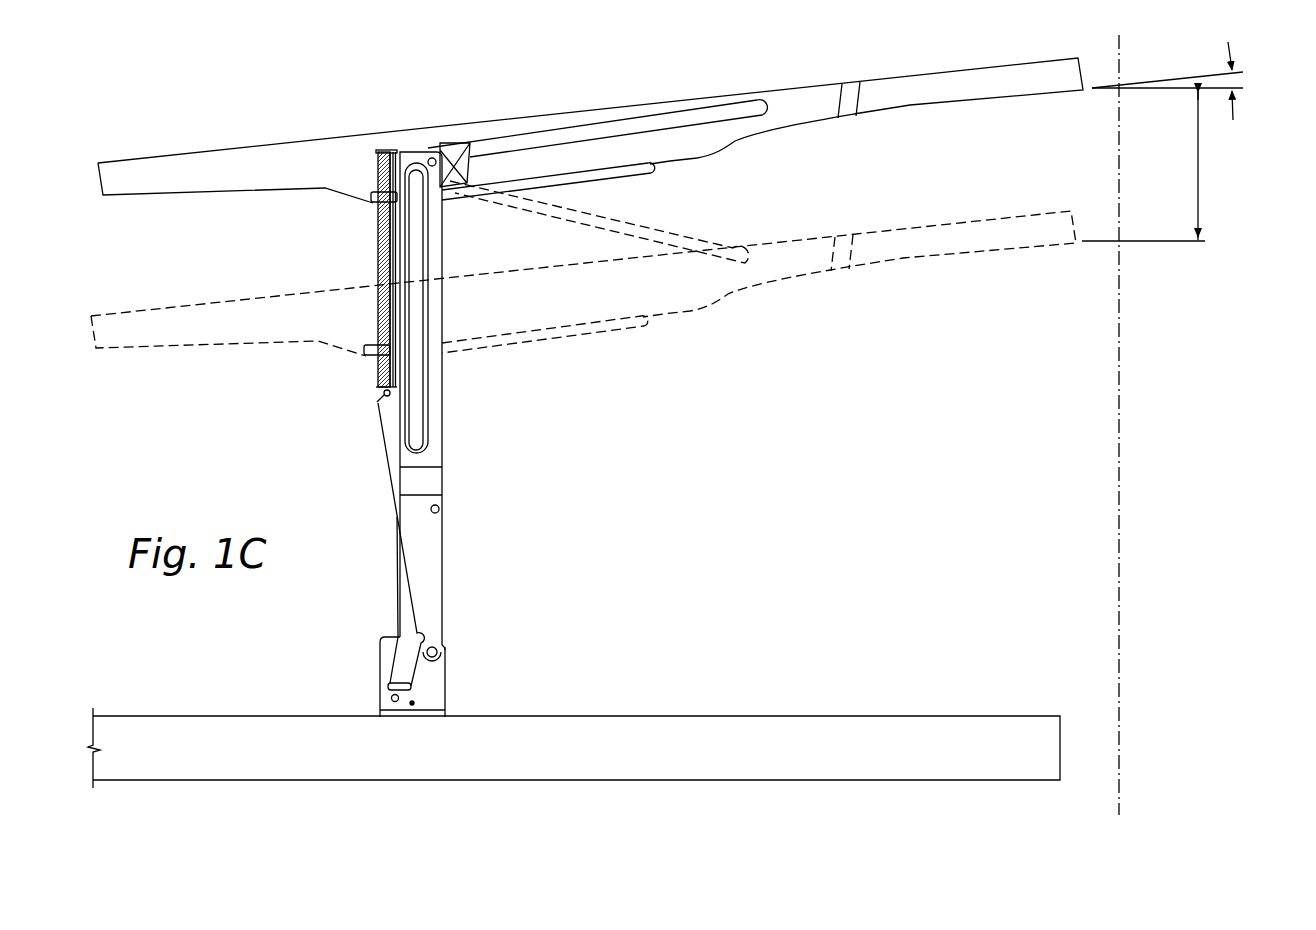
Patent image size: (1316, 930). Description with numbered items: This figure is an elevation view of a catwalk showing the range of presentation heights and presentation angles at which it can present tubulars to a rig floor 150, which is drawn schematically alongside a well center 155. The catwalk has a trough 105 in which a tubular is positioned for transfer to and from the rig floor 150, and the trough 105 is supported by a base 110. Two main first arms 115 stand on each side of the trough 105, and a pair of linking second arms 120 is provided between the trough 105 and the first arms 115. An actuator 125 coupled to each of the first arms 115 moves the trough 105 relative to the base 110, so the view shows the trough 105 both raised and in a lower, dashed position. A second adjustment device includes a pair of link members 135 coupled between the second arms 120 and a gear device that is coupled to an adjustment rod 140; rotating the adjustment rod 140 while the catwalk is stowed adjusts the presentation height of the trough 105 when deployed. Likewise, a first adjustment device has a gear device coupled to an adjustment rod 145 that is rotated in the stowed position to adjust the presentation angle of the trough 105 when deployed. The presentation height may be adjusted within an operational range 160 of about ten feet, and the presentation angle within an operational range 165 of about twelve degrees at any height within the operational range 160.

The trough 105 is at (898, 88).
The base 110 is at (731, 716).
The first arm 115 is at (437, 547).
The second arm 120 is at (632, 125).
The actuator 125 is at (408, 625).
The link member 135 is at (408, 250).
The adjustment rod 140 is at (416, 702).
The adjustment rod 145 is at (375, 403).
The rig floor 150 is at (1167, 241).
The well center 155 is at (1120, 493).
The operational range 160 is at (1202, 163).
The operational range 165 is at (1236, 80).